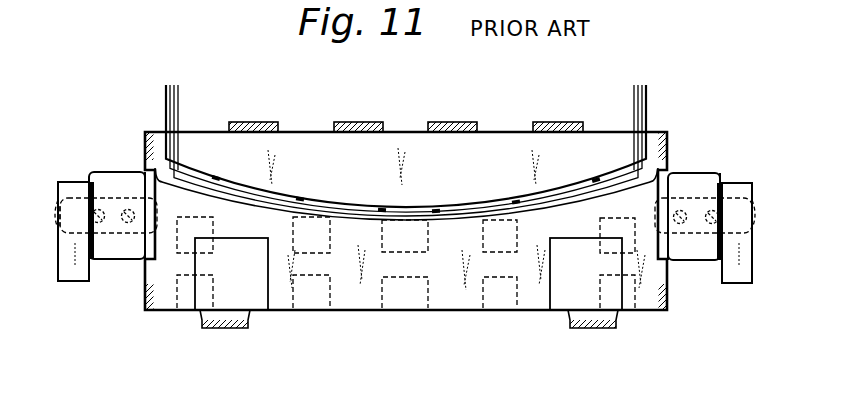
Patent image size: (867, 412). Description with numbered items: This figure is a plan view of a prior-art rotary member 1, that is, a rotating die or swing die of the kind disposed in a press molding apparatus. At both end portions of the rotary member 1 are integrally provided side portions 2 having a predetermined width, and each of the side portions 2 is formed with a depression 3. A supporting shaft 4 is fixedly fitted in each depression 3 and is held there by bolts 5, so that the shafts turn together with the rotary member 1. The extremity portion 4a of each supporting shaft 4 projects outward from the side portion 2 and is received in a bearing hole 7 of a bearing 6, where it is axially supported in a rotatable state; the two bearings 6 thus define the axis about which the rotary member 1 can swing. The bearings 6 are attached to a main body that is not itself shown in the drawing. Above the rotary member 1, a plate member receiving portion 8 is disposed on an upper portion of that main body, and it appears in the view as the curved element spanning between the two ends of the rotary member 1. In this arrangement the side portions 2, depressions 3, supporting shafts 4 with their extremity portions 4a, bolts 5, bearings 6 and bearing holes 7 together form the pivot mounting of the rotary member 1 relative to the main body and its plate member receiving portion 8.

The rotary member 1 is at (340, 314).
The side portion 2 is at (118, 172).
The depression 3 is at (108, 195).
The supporting shaft 4 is at (104, 242).
The extremity portion 4a is at (60, 228).
The bolt 5 is at (103, 235).
The bearing 6 is at (72, 182).
The bearing hole 7 is at (58, 207).
The plate member receiving portion 8 is at (500, 140).